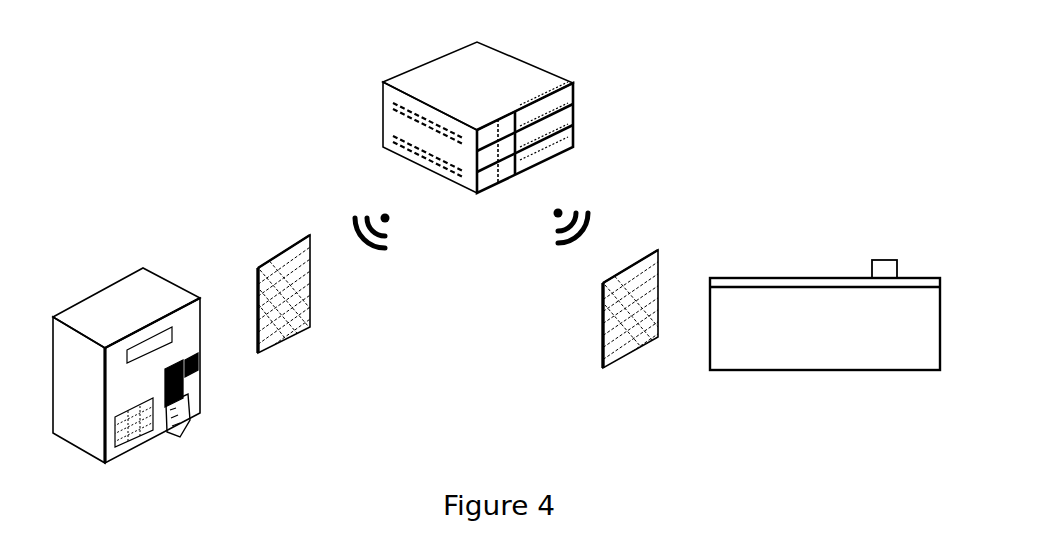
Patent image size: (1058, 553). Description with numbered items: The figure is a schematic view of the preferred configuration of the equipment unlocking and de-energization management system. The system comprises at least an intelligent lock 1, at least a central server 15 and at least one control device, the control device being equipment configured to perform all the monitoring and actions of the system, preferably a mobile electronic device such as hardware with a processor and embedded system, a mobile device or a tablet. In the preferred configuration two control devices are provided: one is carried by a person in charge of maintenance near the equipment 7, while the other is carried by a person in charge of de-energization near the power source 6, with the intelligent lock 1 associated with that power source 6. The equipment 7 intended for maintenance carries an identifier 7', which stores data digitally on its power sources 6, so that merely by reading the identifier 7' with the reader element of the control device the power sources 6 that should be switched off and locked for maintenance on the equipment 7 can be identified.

The intelligent lock 1 is at (215, 386).
The power source 6 is at (130, 273).
The equipment 7 is at (825, 254).
The identifier 7' is at (911, 219).
The central server 15 is at (473, 70).